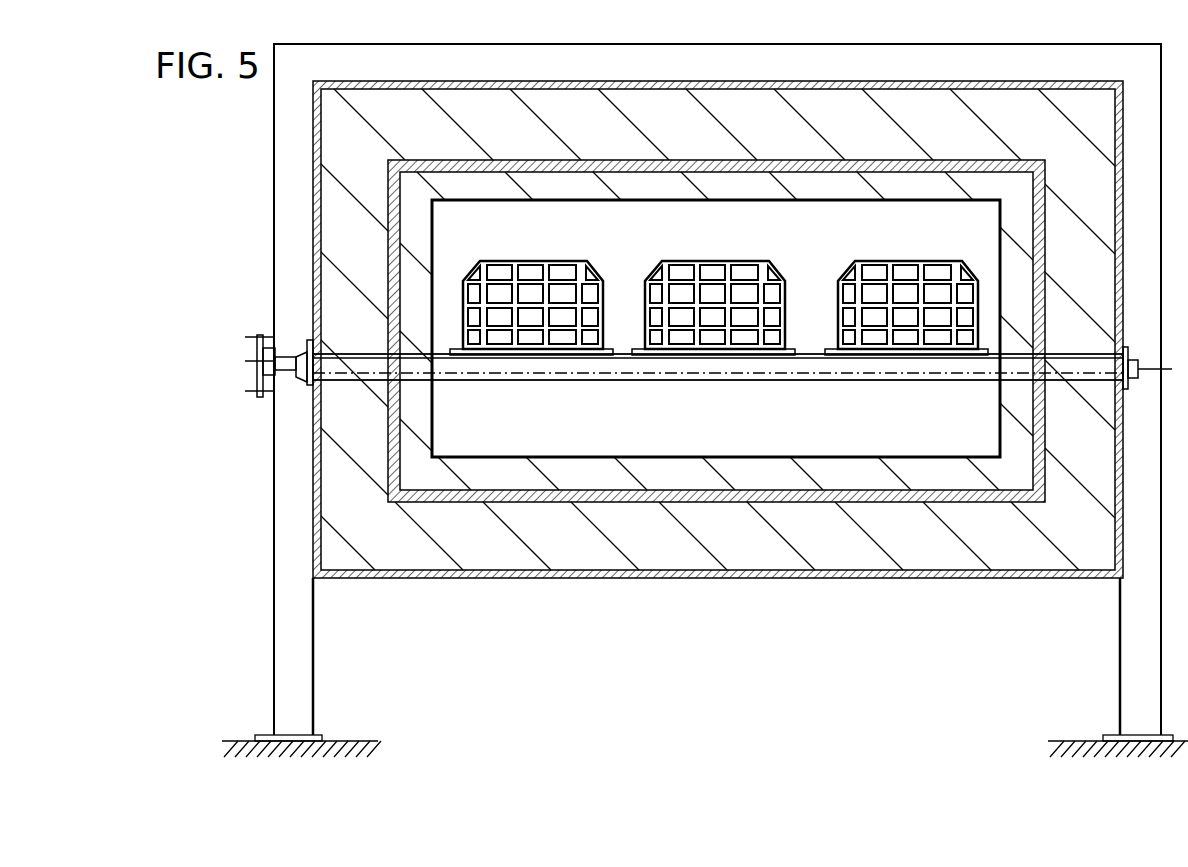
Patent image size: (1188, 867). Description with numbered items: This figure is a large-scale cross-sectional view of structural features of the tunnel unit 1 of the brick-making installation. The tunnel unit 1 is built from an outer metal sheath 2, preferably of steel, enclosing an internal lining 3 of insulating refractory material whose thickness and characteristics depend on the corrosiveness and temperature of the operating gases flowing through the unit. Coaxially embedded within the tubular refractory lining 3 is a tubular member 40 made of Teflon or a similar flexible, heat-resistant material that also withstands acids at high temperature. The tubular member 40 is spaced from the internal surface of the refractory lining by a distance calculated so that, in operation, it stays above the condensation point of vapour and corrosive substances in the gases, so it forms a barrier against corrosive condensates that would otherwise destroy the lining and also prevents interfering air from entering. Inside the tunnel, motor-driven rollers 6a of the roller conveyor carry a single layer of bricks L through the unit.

The tunnel unit 1 is at (236, 138).
The outer metal sheath 2 is at (316, 264).
The internal lining of insulating refractory material 3 is at (338, 183).
The tubular member 40 is at (497, 500).
The motor-driven rollers 6a is at (712, 365).
The bricks L is at (525, 261).